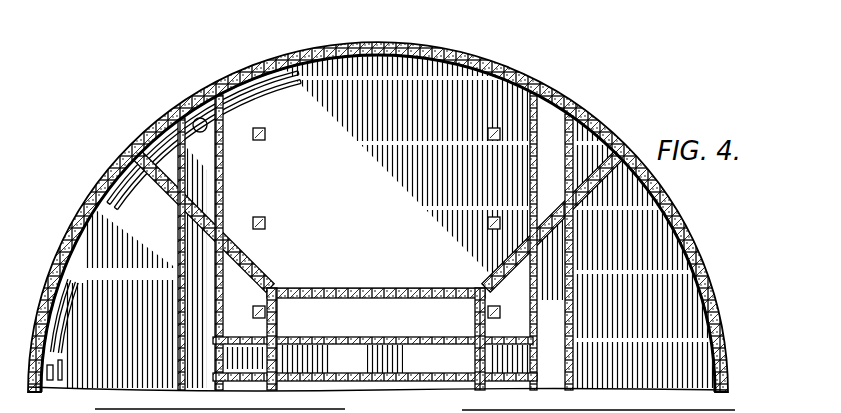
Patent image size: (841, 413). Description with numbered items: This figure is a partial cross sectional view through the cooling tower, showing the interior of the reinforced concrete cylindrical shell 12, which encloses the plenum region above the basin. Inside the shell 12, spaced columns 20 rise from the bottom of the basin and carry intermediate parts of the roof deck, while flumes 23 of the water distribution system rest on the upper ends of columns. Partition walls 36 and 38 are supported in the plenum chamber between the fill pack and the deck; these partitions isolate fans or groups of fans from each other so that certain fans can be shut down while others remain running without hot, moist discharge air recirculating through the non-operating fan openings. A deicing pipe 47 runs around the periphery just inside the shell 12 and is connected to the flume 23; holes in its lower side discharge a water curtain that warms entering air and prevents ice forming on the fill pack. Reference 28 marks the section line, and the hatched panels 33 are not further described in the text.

The cylindrical shell 12 is at (84, 207).
The columns 20 is at (267, 224).
The flumes 23 is at (224, 168).
The section line 28 is at (191, 143).
The wall panels 33 is at (447, 212).
The partition wall 36 is at (385, 288).
The partition wall 38 is at (252, 266).
The deicing pipe 47 is at (268, 90).